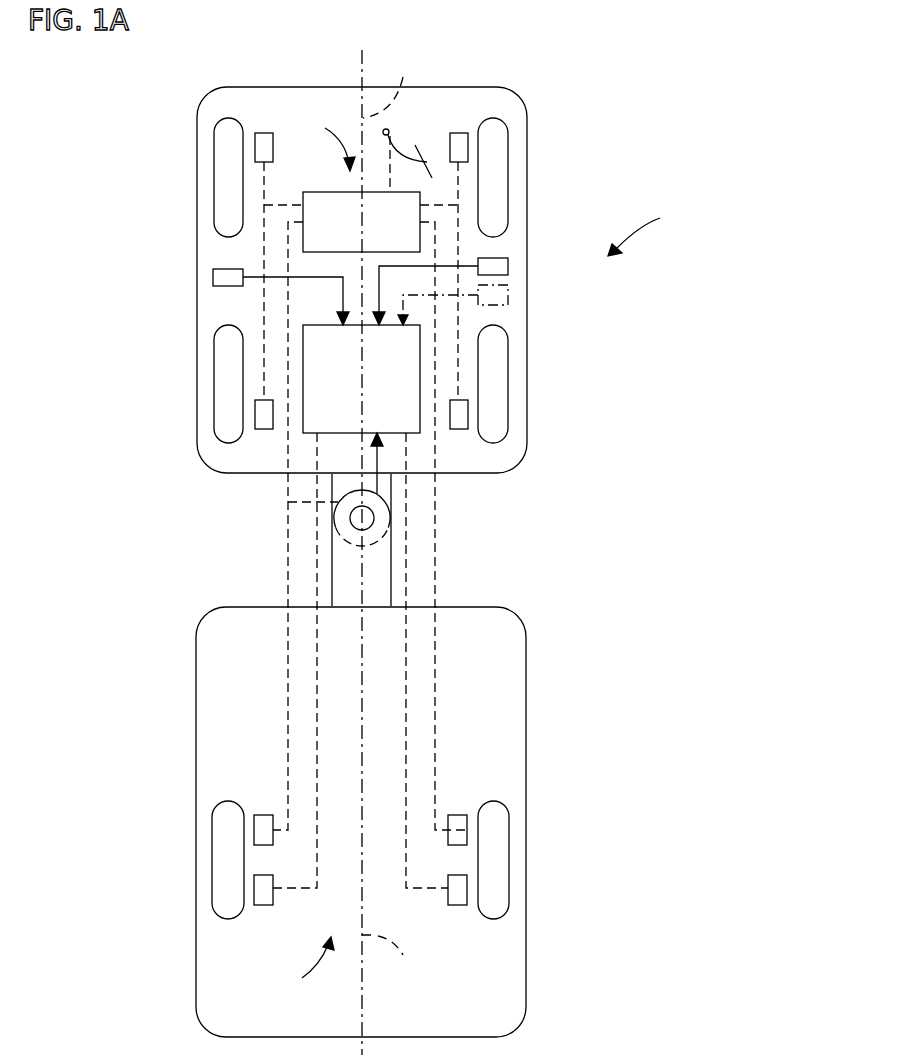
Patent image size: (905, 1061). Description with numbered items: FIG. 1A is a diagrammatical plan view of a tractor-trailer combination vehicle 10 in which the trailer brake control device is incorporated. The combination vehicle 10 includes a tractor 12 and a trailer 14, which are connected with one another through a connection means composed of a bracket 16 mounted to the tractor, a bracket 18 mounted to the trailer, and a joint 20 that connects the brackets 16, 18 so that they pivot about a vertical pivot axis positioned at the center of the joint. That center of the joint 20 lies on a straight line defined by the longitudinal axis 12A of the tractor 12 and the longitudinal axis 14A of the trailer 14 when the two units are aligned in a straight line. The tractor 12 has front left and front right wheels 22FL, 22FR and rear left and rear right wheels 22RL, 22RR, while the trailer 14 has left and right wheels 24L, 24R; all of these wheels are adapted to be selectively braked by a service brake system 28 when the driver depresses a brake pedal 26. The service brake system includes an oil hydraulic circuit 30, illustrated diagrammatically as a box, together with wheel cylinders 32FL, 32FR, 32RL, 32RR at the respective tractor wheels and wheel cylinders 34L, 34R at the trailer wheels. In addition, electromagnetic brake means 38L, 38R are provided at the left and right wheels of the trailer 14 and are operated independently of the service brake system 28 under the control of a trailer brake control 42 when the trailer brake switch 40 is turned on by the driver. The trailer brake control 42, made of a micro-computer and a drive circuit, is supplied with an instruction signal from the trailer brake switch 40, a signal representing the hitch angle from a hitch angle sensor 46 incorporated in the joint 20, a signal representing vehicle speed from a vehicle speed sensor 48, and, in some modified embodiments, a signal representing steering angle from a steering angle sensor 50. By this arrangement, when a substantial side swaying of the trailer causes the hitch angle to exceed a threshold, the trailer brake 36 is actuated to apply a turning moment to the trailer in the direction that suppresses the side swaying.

The combination vehicle 10 is at (650, 229).
The tractor 12 is at (514, 93).
The longitudinal axis of the tractor 12A is at (401, 84).
The trailer 14 is at (527, 681).
The longitudinal axis of the trailer 14A is at (400, 961).
The bracket 16 is at (391, 494).
The bracket 18 is at (391, 566).
The joint 20 is at (323, 523).
The front left wheel 22FL is at (214, 215).
The front right wheel 22FR is at (508, 197).
The rear left wheel 22RL is at (214, 352).
The rear right wheel 22RR is at (508, 348).
The left wheel 24L is at (212, 862).
The right wheel 24R is at (509, 855).
The brake pedal 26 is at (421, 154).
The service brake system 28 is at (326, 142).
The oil hydraulic circuit 30 is at (342, 191).
The wheel cylinder 32FL is at (255, 150).
The wheel cylinder 32FR is at (468, 148).
The wheel cylinder 32RL is at (255, 418).
The wheel cylinder 32RR is at (468, 412).
The wheel cylinder 34L is at (254, 831).
The wheel cylinder 34R is at (468, 831).
The trailer brake 36 is at (303, 972).
The electromagnetic brake means 38L is at (254, 888).
The electromagnetic brake means 38R is at (468, 888).
The trailer brake switch 40 is at (508, 266).
The trailer brake control 42 is at (347, 425).
The hitch angle sensor 46 is at (345, 538).
The vehicle speed sensor 48 is at (213, 280).
The steering angle sensor 50 is at (508, 295).